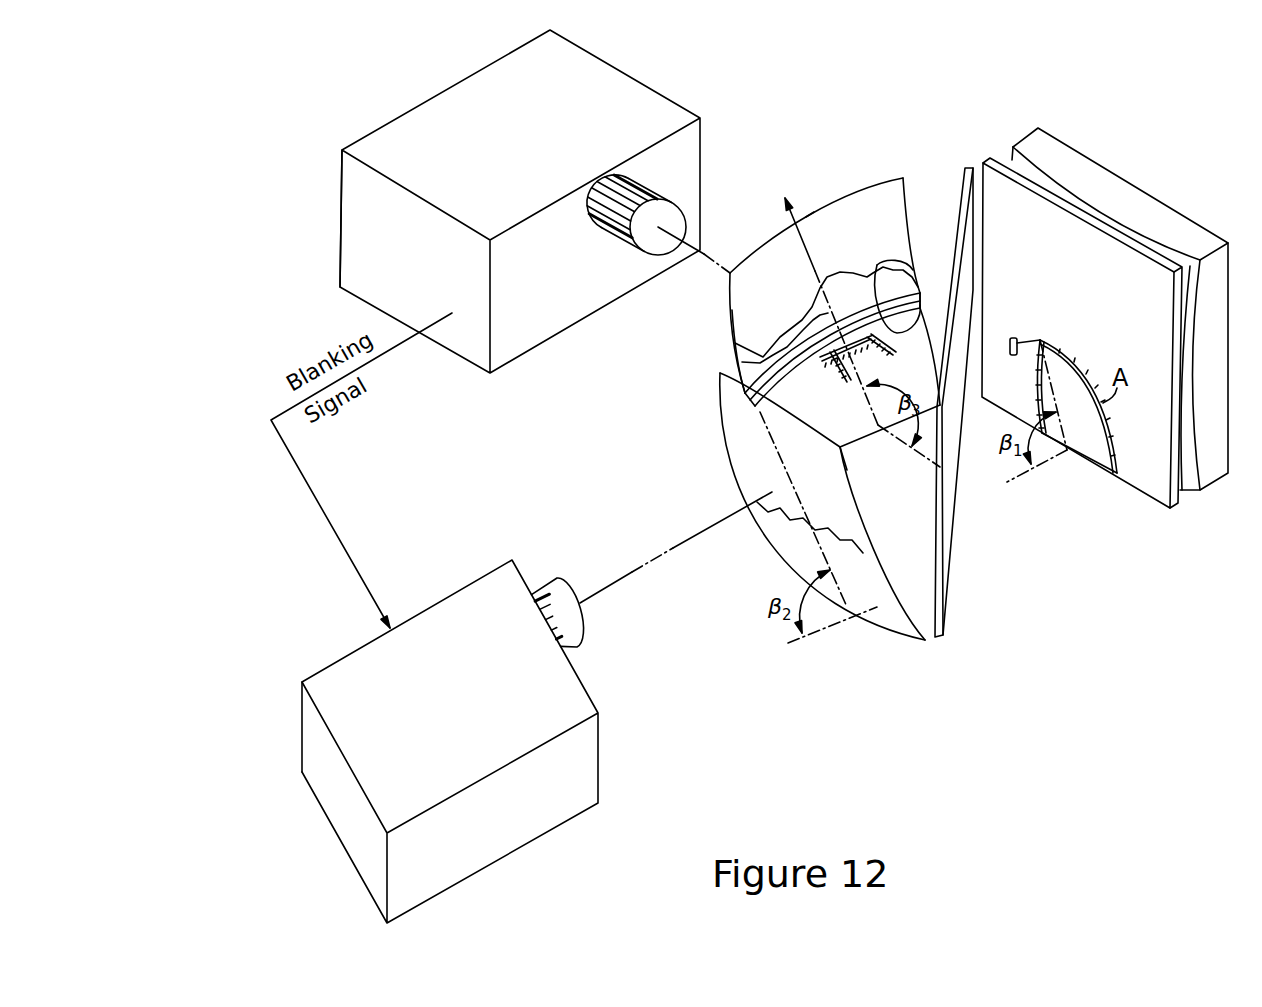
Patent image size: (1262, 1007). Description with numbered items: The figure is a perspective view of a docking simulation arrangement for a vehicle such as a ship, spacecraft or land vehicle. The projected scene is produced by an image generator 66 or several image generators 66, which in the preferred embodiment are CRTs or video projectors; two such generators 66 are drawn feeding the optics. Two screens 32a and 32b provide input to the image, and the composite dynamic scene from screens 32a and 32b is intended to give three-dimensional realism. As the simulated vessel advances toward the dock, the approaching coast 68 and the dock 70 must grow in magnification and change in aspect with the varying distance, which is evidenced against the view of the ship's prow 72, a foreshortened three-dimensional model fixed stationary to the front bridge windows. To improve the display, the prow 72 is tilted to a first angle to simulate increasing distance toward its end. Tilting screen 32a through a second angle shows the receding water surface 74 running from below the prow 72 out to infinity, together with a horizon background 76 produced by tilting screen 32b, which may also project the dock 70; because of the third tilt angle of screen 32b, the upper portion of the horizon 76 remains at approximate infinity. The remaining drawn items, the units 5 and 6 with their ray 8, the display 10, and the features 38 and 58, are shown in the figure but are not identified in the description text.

The light source 5 is at (600, 775).
The detector 6 is at (532, 350).
The ray path 8 is at (797, 198).
The display screen 10 is at (1072, 138).
The screen 32a is at (910, 637).
The screen 32b is at (825, 215).
The screen face 38 is at (1120, 450).
The mirror edge / plate 58 is at (865, 488).
The image generator 66 is at (343, 180).
The approaching coast 68 is at (912, 262).
The dock 70 is at (921, 294).
The ship's prow 72 is at (1040, 340).
The receding water surface 74 is at (883, 607).
The horizon background 76 is at (732, 343).